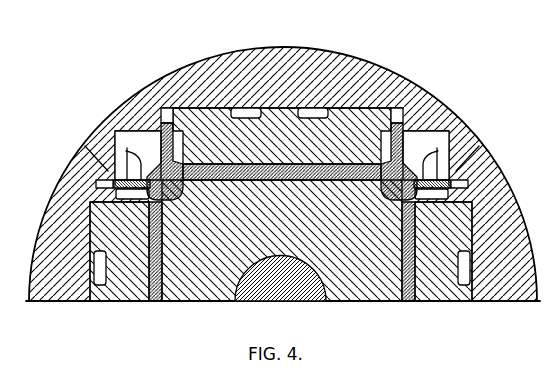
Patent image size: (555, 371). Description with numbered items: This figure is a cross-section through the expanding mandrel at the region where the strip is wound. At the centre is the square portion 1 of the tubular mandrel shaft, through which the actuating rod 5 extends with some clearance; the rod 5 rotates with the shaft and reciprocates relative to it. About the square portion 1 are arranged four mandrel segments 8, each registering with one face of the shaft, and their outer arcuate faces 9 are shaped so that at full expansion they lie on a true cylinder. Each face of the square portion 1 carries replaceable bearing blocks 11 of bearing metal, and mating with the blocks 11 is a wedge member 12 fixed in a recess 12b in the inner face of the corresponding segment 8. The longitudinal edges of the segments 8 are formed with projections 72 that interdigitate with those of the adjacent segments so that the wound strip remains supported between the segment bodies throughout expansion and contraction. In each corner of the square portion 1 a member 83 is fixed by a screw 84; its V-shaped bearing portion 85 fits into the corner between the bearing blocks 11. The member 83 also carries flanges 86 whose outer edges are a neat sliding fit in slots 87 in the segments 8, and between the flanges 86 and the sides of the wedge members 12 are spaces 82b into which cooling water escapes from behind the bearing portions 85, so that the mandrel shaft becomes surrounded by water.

The square portion of the shaft 1 is at (208, 271).
The actuating rod 5 is at (270, 289).
The mandrel segment 8 is at (268, 40).
The arcuate face 9 is at (200, 51).
The bearing block 11 is at (158, 251).
The wedge member 12 is at (333, 108).
The recess 12b is at (457, 270).
The projection 72 is at (108, 112).
The space 82b is at (154, 131).
The member 83 is at (379, 172).
The screw 84 is at (184, 200).
The V-shaped bearing portion 85 is at (139, 193).
The flange 86 is at (153, 146).
The slot 87 is at (91, 172).